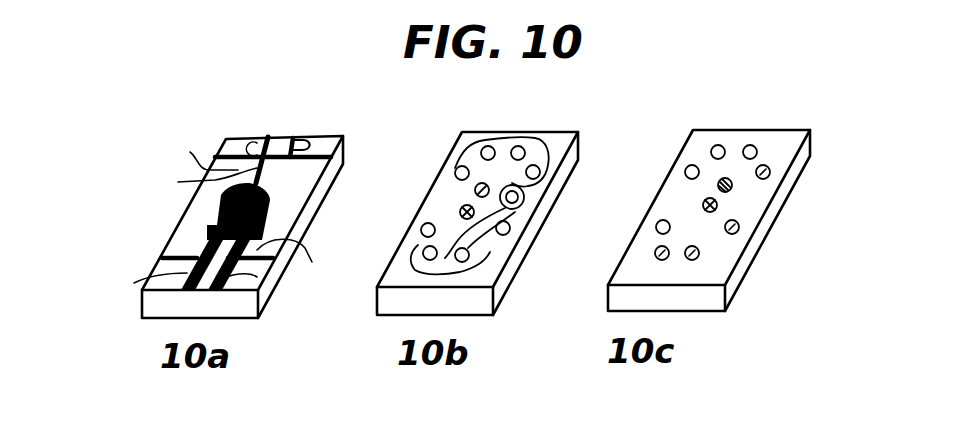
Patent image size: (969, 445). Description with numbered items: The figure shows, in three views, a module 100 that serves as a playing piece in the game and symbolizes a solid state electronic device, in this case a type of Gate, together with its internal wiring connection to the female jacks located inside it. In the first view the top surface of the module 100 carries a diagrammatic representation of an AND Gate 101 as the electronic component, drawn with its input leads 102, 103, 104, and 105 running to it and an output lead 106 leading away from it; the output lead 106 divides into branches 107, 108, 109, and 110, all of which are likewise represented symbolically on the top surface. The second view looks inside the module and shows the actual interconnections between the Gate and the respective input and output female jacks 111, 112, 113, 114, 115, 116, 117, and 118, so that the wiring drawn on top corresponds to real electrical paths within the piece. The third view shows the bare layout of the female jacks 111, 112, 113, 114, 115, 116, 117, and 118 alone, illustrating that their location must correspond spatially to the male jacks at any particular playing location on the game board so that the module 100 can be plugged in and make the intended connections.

The module 100 is at (222, 141).
The AND Gate 101 is at (215, 206).
The input lead 102 is at (168, 284).
The input lead 103 is at (183, 256).
The input lead 104 is at (302, 265).
The input lead 105 is at (268, 295).
The output lead 106 is at (188, 181).
The branch of output lead 107 is at (189, 153).
The branch of output lead 108 is at (260, 113).
The branch of output lead 109 is at (343, 112).
The branch of output lead 110 is at (413, 112).
The female jack 111 is at (423, 253).
The female jack 112 is at (421, 230).
The female jack 113 is at (657, 227).
The female jack 114 is at (655, 253).
The female jack 115 is at (455, 174).
The female jack 116 is at (488, 150).
The female jack 117 is at (713, 152).
The female jack 118 is at (686, 172).